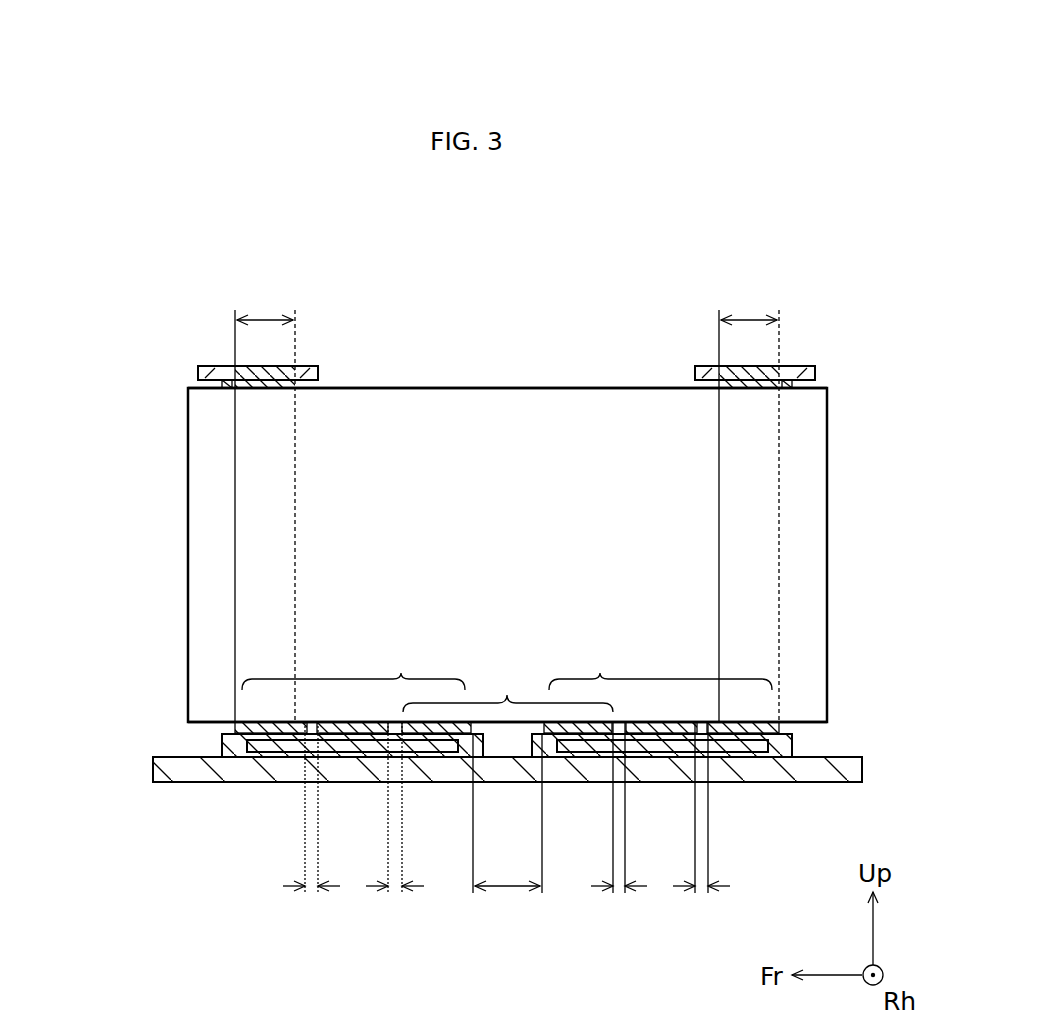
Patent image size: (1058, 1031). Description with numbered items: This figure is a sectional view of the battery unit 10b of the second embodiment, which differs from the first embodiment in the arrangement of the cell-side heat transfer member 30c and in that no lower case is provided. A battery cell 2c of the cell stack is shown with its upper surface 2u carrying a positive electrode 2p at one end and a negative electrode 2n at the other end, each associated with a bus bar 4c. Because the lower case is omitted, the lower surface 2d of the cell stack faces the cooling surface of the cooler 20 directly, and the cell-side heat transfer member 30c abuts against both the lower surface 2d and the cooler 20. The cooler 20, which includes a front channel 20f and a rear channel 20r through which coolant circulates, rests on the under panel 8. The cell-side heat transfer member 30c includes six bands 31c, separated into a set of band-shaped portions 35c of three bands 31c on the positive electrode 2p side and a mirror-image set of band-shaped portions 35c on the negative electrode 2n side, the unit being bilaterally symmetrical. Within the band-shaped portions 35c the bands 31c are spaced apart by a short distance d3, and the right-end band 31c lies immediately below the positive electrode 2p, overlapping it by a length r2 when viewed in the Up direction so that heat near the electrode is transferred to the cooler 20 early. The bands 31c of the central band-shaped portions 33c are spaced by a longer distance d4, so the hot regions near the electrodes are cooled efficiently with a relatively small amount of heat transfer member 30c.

The battery unit 10b is at (150, 320).
The battery cell 2c is at (198, 508).
The upper surface of case 2u is at (520, 387).
The lower surface of the cell stack 2d is at (812, 726).
The negative electrode 2n is at (222, 385).
The positive electrode 2p is at (792, 385).
The bus bar 4c is at (208, 367).
The length r2 is at (507, 504).
The band-shaped portions 35c is at (401, 665).
The band-shaped portions 33c is at (507, 688).
The cell-side heat transfer member 30c is at (482, 626).
The band 31c is at (413, 730).
The cooler 20 is at (805, 743).
The front channel 20f is at (240, 745).
The rear channel 20r is at (775, 745).
The under panel 8 is at (195, 770).
The distance d3 is at (506, 824).
The distance d4 is at (507, 830).